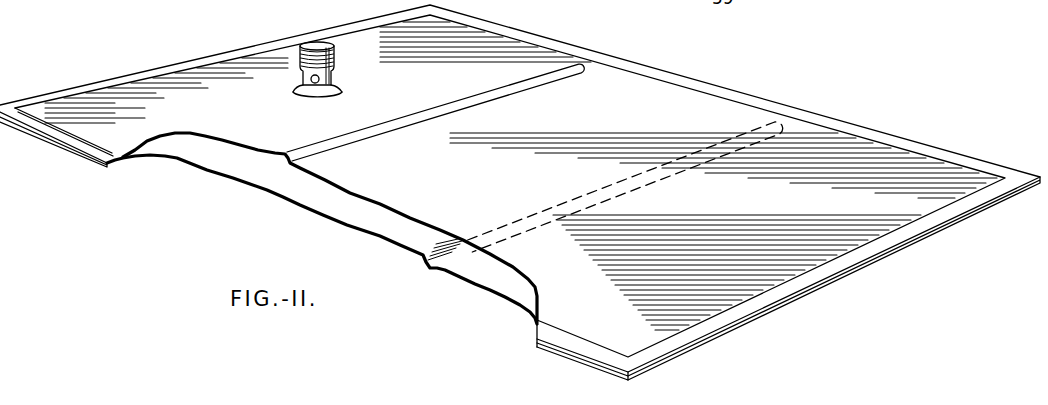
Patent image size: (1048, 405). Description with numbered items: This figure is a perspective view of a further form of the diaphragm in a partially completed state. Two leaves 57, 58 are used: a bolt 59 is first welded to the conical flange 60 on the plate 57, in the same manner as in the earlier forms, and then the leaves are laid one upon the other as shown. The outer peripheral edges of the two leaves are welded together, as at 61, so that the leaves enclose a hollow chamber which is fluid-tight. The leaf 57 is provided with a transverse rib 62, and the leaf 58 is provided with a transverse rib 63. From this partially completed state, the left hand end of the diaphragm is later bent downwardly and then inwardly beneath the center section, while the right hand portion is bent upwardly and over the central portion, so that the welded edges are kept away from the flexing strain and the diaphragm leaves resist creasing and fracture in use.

The leaf 57 is at (650, 97).
The leaf 58 is at (325, 207).
The bolt 59 is at (335, 62).
The conical flange 60 is at (338, 93).
The welded outer peripheral edges 61 is at (993, 165).
The transverse rib 62 is at (549, 73).
The transverse rib 63 is at (430, 271).